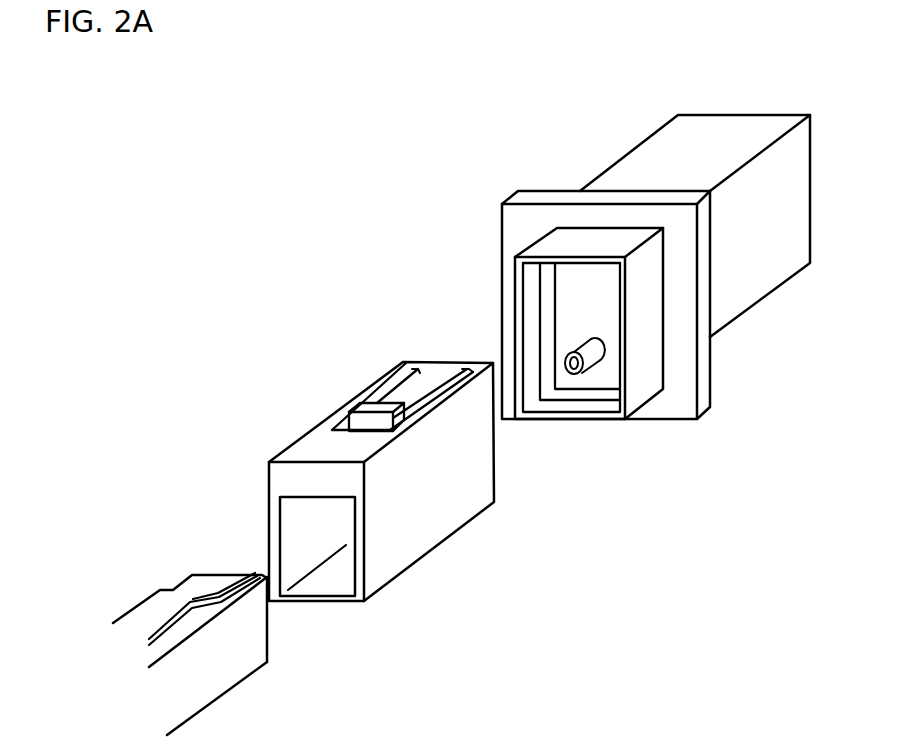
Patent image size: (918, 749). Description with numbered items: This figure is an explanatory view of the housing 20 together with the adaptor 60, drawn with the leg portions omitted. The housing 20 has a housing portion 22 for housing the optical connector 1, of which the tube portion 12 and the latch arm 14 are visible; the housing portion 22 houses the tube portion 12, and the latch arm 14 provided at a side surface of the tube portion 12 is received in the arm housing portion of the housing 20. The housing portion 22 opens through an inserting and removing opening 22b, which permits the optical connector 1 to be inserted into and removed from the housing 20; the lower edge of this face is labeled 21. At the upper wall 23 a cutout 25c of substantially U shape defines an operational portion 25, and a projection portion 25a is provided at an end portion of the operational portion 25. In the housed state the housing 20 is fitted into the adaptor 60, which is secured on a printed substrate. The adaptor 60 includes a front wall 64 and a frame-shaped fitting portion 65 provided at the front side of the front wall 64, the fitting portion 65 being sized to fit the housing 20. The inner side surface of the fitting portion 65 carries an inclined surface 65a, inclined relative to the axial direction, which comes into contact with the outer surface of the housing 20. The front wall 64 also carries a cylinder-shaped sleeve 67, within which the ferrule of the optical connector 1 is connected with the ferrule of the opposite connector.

The optical connector 1 is at (230, 634).
The tube portion 12 is at (253, 633).
The latch arm 14 is at (190, 597).
The housing 20 is at (377, 481).
The front wall of housing 21 is at (340, 598).
The housing portion 22 is at (342, 523).
The inserting and removing opening 22b is at (300, 520).
The upper wall 23 is at (317, 445).
The operational portion 25 is at (423, 383).
The projection portion 25a is at (372, 418).
The cutout 25c is at (467, 370).
The adaptor 60 is at (617, 260).
The front wall 64 is at (523, 223).
The fitting portion 65 is at (644, 377).
The inclined surface 65a is at (585, 407).
The sleeve 67 is at (565, 368).